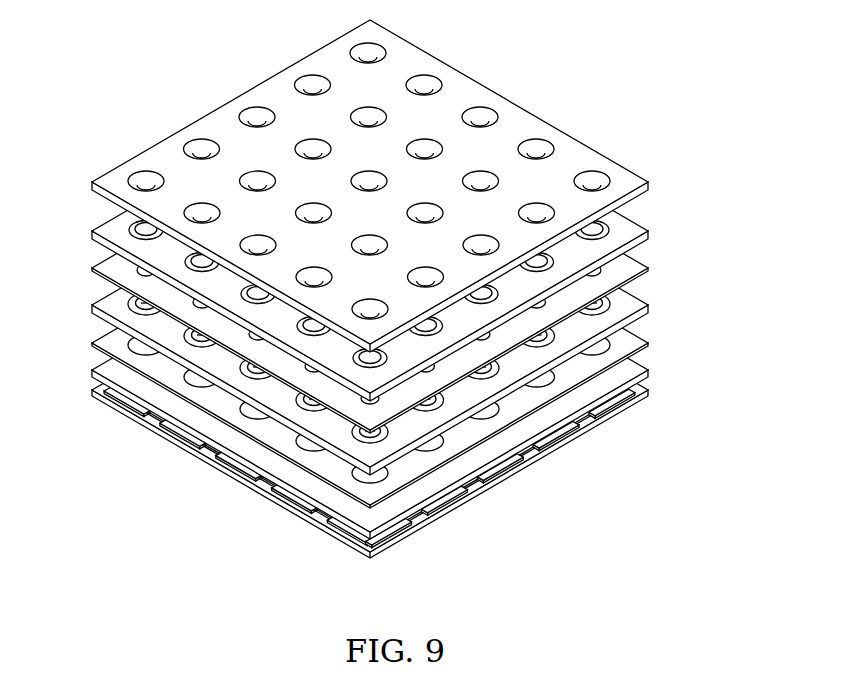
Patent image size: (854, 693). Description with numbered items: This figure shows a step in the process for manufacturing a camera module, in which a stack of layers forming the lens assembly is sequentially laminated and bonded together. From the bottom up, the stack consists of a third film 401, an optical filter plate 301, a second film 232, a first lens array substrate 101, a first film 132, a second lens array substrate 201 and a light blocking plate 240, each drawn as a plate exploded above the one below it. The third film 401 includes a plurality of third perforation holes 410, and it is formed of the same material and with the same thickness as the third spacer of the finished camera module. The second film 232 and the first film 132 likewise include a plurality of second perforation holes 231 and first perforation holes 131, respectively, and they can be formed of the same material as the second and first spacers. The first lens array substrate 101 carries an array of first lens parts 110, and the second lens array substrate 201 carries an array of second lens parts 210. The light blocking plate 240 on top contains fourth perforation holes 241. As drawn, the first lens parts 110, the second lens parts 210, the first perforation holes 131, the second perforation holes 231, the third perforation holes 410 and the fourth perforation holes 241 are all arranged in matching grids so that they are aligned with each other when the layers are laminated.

The first lens array substrate 101 is at (635, 308).
The first lens parts 110 is at (138, 308).
The first perforation holes 131 is at (138, 349).
The first film 132 is at (635, 345).
The second lens array substrate 201 is at (630, 230).
The second lens parts 210 is at (140, 225).
The second perforation holes 231 is at (137, 273).
The second film 232 is at (632, 270).
The light blocking plate 240 is at (525, 125).
The fourth perforation holes 241 is at (425, 86).
The optical filter plate 301 is at (640, 377).
The third film 401 is at (642, 393).
The third perforation holes 410 is at (565, 438).